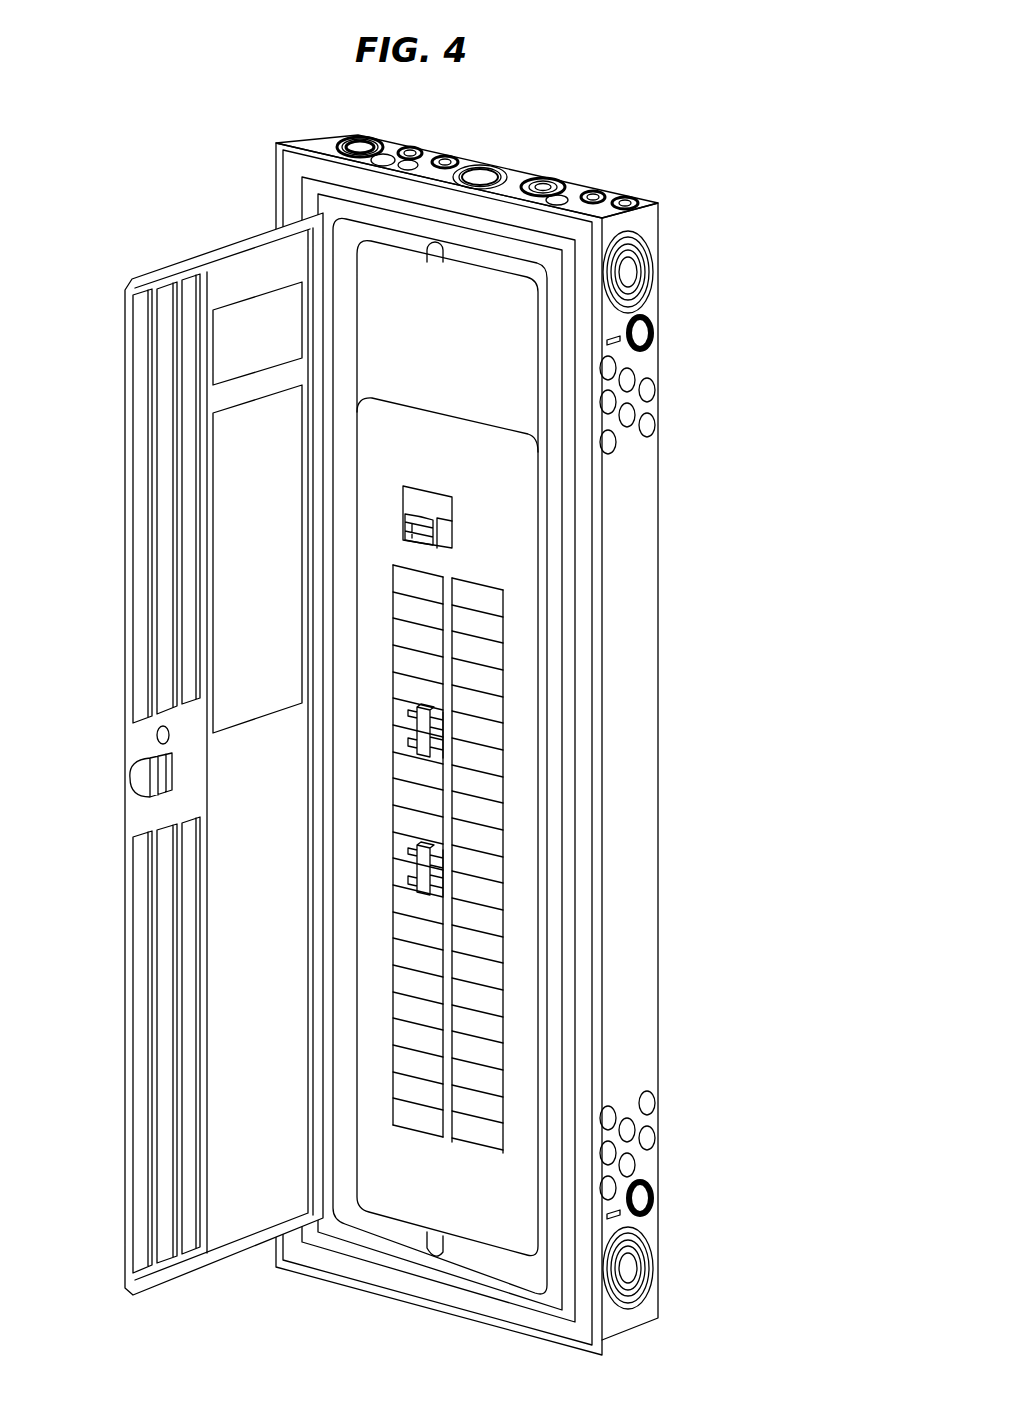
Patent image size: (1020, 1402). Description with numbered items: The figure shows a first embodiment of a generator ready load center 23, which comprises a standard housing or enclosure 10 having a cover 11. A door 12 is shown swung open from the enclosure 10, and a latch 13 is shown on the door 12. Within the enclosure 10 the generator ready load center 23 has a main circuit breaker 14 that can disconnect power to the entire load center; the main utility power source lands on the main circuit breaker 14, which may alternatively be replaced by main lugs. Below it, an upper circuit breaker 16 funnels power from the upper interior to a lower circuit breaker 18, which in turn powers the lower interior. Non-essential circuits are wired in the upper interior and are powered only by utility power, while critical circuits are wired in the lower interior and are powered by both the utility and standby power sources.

The housing or enclosure 10 is at (643, 562).
The cover 11 is at (525, 955).
The door 12 is at (233, 272).
The latch 13 is at (132, 783).
The main circuit breaker 14 is at (435, 534).
The upper circuit breaker 16 is at (435, 738).
The lower circuit breaker 18 is at (435, 875).
The generator ready load center 23 is at (688, 318).